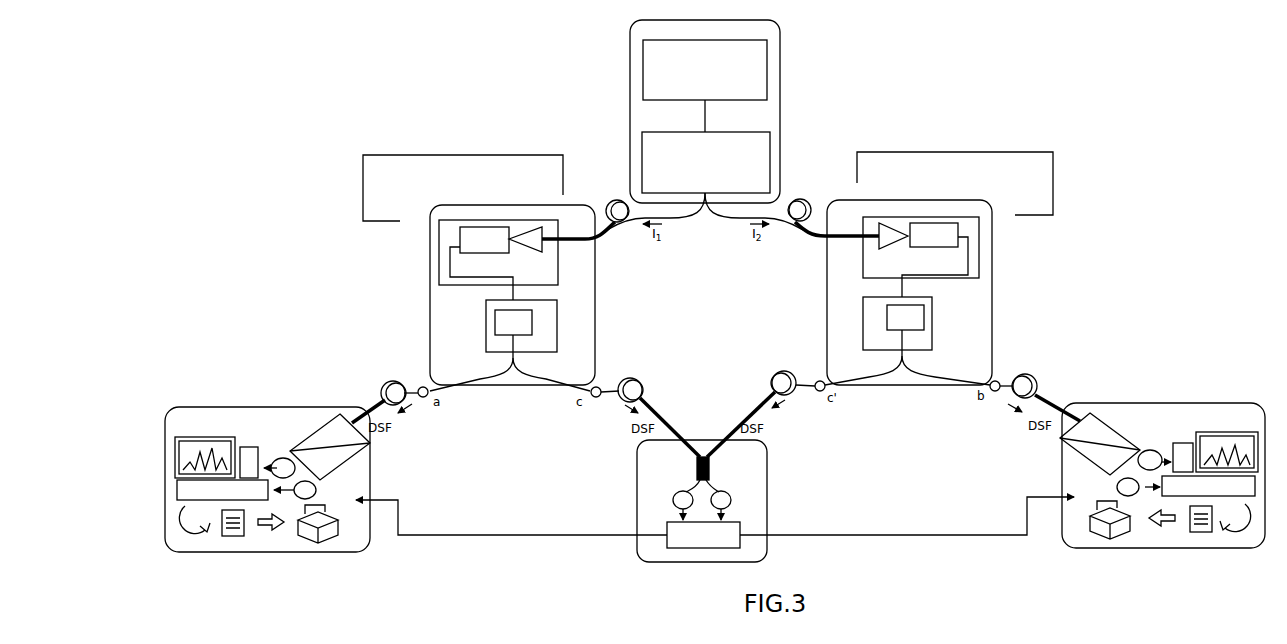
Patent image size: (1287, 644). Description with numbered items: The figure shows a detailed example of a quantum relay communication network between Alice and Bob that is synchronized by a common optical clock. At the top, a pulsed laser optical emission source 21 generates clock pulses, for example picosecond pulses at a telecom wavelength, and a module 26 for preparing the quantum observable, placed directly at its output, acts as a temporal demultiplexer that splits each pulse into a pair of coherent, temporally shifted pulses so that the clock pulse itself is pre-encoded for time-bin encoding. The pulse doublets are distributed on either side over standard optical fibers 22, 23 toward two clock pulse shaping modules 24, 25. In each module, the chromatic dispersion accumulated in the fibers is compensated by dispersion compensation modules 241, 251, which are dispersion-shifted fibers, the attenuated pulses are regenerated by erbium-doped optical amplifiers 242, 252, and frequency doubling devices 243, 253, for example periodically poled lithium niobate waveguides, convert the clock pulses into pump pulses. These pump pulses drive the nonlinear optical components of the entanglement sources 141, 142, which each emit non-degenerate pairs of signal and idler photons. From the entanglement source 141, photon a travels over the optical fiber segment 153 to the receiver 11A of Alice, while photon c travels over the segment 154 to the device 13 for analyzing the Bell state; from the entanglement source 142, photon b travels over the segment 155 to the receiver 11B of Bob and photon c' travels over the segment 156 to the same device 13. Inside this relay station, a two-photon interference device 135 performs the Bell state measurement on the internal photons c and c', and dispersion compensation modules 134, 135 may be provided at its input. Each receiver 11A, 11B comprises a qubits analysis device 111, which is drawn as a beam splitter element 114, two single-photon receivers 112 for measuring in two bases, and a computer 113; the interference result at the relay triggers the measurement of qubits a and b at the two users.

The optical emission source 21 is at (768, 62).
The module for preparing the quantum observable 26 is at (770, 150).
The optical fiber 22 is at (693, 221).
The optical fiber 23 is at (713, 221).
The clock pulse shaping module 24 is at (363, 178).
The clock pulse shaping module 25 is at (1053, 180).
The dispersion compensation module 241 is at (571, 238).
The optical amplifier 242 is at (511, 235).
The frequency doubling device 243 is at (454, 235).
The dispersion compensation module 251 is at (848, 236).
The optical amplifier 252 is at (902, 232).
The frequency doubling device 253 is at (968, 237).
The entanglement source 141 is at (495, 322).
The entanglement source 142 is at (924, 322).
The optical fiber segment 153 is at (472, 378).
The optical fiber segment 154 is at (585, 380).
The optical fiber segment 155 is at (950, 380).
The optical fiber segment 156 is at (865, 378).
The receiver 11A is at (270, 407).
The receiver 11B is at (1163, 403).
The computer 113 is at (215, 437).
The beam splitter 114 is at (367, 411).
The qubits analysis device 111 is at (345, 458).
The receivers 112 is at (316, 476).
The dispersion compensation module 134 is at (714, 426).
The two-photon interference device 135 is at (727, 478).
The device for analyzing the Bell state 13 is at (745, 562).